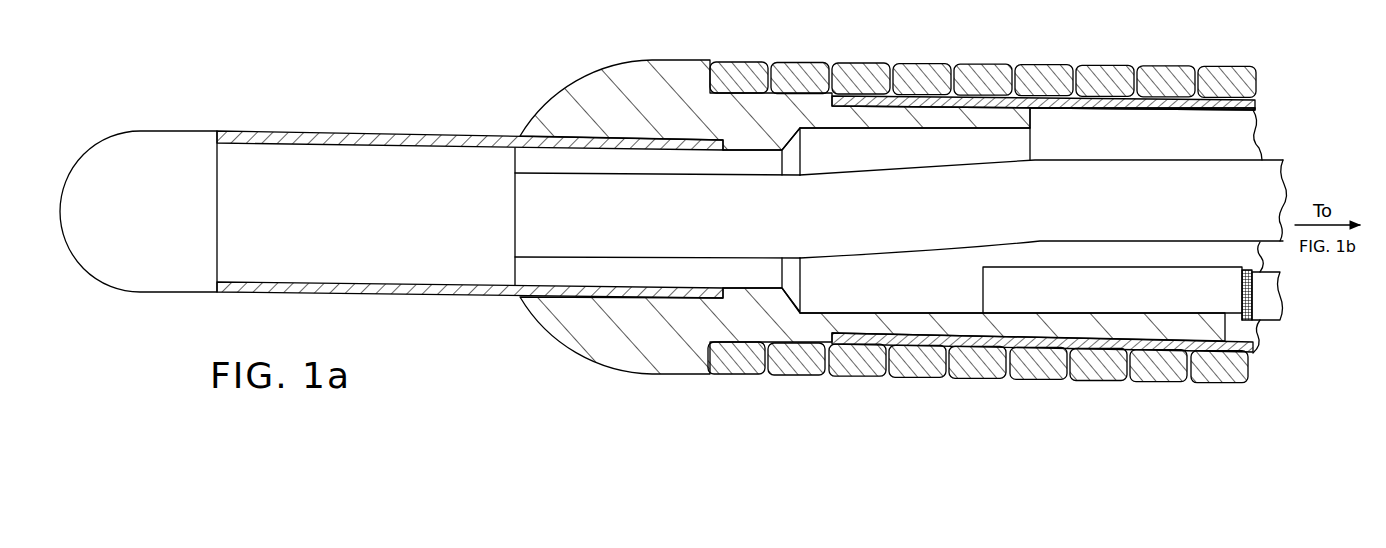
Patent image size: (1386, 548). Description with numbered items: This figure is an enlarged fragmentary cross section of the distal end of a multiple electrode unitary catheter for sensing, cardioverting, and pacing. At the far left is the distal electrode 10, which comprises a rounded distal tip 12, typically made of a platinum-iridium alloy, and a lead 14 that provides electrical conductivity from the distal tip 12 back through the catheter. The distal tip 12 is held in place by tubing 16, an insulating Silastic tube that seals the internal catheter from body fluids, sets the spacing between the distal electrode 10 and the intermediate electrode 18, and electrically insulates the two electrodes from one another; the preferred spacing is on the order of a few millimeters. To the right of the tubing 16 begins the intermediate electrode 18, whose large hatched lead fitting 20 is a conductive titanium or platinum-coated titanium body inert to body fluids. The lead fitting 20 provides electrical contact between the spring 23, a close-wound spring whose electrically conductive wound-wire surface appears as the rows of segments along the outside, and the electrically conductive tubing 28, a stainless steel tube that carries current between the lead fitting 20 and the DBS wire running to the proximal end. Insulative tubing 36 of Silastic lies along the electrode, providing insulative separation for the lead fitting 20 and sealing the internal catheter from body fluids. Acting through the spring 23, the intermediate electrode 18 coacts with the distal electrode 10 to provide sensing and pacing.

The distal electrode 10 is at (673, 248).
The distal tip 12 is at (177, 295).
The lead 14 is at (575, 243).
The tubing 16 is at (373, 297).
The intermediate electrode 18 is at (982, 249).
The lead fitting 20 is at (582, 331).
The spring 23 is at (906, 379).
The electrically conductive tubing 28 is at (1073, 307).
The insulative tubing 36 is at (1163, 344).